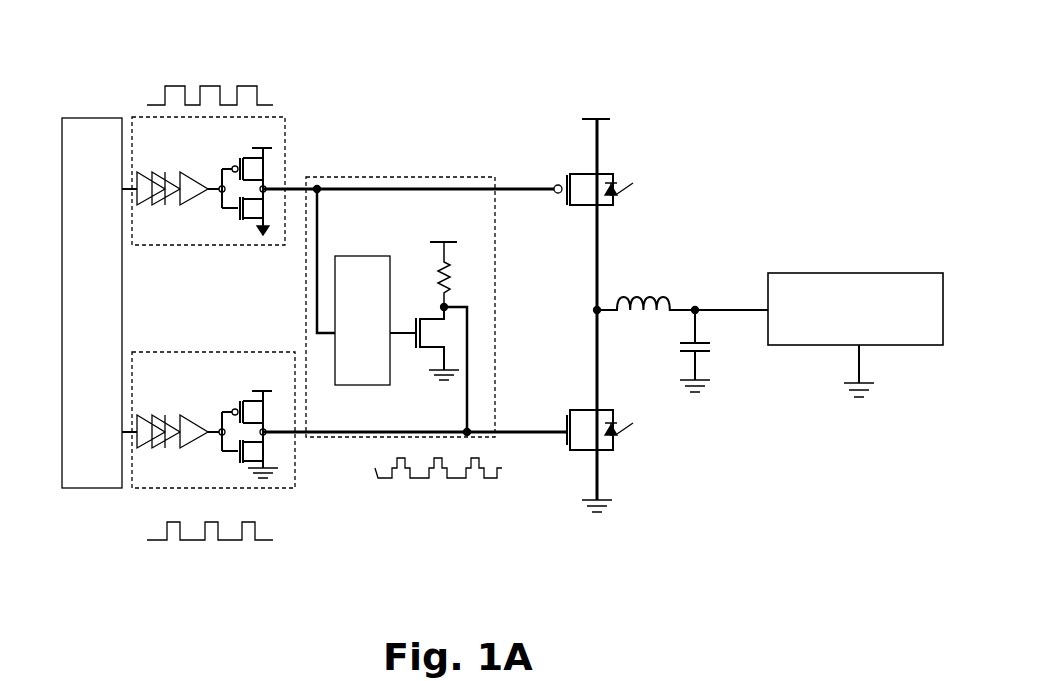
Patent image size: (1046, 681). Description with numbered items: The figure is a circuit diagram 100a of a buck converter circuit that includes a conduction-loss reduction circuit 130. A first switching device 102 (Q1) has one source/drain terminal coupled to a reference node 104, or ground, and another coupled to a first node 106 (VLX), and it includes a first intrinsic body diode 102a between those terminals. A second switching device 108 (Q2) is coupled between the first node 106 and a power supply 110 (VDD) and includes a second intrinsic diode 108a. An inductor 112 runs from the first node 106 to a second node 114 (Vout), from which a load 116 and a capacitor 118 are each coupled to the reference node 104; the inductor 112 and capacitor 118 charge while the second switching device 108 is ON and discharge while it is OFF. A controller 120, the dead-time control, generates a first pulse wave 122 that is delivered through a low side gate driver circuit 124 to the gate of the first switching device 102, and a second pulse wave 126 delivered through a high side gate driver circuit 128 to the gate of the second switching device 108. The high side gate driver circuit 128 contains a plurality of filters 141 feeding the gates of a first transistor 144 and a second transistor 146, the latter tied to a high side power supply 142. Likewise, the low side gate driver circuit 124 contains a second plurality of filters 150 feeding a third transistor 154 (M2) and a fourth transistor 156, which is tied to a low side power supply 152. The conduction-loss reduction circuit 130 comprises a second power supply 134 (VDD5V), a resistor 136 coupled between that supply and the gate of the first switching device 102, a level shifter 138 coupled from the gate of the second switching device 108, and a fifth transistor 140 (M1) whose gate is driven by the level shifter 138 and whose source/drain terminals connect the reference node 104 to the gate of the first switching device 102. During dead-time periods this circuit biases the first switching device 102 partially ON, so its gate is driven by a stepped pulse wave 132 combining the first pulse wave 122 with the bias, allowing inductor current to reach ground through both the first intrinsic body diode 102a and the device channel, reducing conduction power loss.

The circuit diagram 100a is at (866, 56).
The first switching device 102 is at (641, 448).
The first intrinsic body diode 102a is at (625, 430).
The reference node 104 is at (450, 385).
The first node 106 is at (594, 311).
The second switching device 108 is at (640, 165).
The second intrinsic diode 108a is at (627, 187).
The power supply 110 is at (582, 118).
The inductor 112 is at (648, 302).
The second node 114 is at (695, 306).
The load 116 is at (915, 347).
The capacitor 118 is at (712, 352).
The controller 120 is at (85, 118).
The first pulse wave 122 is at (208, 549).
The low side gate driver circuit 124 is at (208, 469).
The second pulse wave 126 is at (216, 77).
The high side gate driver circuit 128 is at (201, 135).
The conduction-loss reduction circuit 130 is at (415, 384).
The low-side gate signal VGL 132 is at (438, 492).
The second power supply 134 is at (455, 243).
The resistor 136 is at (440, 268).
The level shifter 138 is at (343, 256).
The fifth transistor 140 is at (417, 362).
The plurality of filters 141 is at (167, 167).
The high side power supply 142 is at (259, 154).
The first transistor 144 is at (222, 218).
The second transistor 146 is at (216, 180).
The second plurality of filters 150 is at (165, 407).
The low side power supply 152 is at (259, 397).
The third transistor 154 is at (220, 460).
The fourth transistor 156 is at (220, 425).